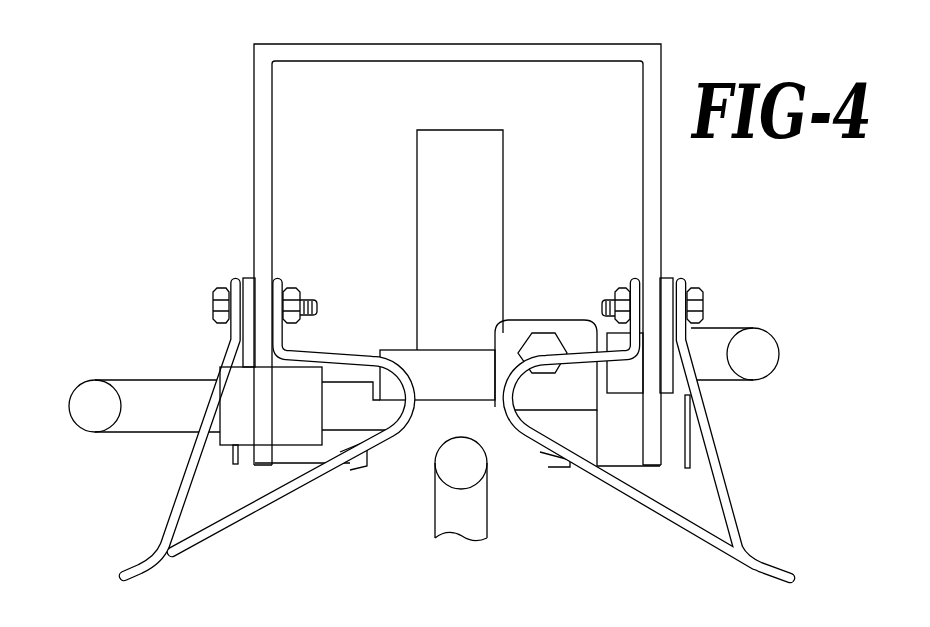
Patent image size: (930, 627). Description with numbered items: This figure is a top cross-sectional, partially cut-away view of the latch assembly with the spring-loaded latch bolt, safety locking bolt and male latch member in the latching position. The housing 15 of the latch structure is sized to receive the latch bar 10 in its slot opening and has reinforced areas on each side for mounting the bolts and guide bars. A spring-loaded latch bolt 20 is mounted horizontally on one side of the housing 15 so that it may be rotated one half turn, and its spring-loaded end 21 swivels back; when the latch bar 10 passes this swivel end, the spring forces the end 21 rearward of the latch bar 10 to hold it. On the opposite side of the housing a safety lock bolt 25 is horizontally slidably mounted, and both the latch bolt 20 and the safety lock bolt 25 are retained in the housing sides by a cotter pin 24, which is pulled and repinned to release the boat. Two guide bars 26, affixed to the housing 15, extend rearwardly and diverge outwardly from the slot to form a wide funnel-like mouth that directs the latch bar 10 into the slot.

The latch bar 10 is at (433, 518).
The housing 15 is at (308, 138).
The spring-loaded latch bolt 20 is at (757, 325).
The spring-loaded end 21 is at (495, 335).
The cotter pin 24 is at (232, 462).
The safety lock bolt 25 is at (133, 378).
The guide bars 26 is at (172, 560).